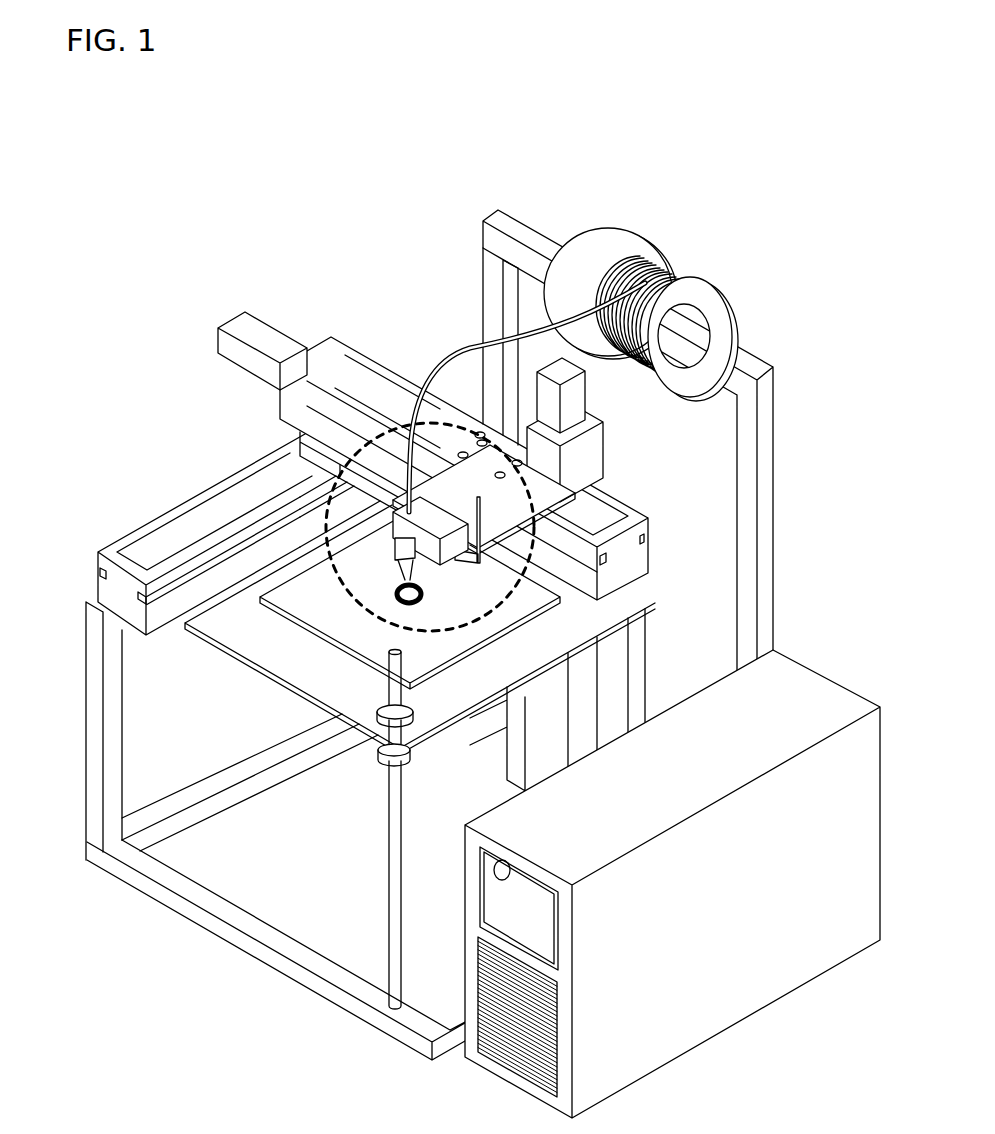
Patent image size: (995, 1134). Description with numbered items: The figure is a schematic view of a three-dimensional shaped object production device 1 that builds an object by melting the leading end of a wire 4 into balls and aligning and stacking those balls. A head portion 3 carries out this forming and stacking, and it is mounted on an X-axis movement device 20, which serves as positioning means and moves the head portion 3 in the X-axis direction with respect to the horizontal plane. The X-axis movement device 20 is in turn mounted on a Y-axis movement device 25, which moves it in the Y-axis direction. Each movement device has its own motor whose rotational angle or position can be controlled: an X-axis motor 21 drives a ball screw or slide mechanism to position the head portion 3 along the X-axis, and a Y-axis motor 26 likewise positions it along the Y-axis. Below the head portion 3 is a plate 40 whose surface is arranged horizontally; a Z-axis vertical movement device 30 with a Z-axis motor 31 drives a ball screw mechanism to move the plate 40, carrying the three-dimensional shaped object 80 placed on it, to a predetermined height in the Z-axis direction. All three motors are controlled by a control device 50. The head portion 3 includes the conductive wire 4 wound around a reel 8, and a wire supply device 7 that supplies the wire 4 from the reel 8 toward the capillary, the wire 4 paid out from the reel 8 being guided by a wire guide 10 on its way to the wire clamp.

The three-dimensional shaped object production device 1 is at (424, 260).
The head portion 3 is at (360, 566).
The wire 4 is at (297, 433).
The wire supply device 7 is at (642, 274).
The reel 8 is at (708, 302).
The wire guide 10 is at (340, 472).
The X-axis movement device 20 is at (633, 507).
The X-axis motor 21 is at (238, 325).
The Y-axis movement device 25 is at (177, 534).
The Y-axis motor 26 is at (458, 350).
The Z-axis vertical movement device 30 is at (607, 447).
The Z-axis motor 31 is at (550, 358).
The plate 40 is at (390, 650).
The control device 50 is at (817, 700).
The three-dimensional shaped object 80 is at (393, 593).